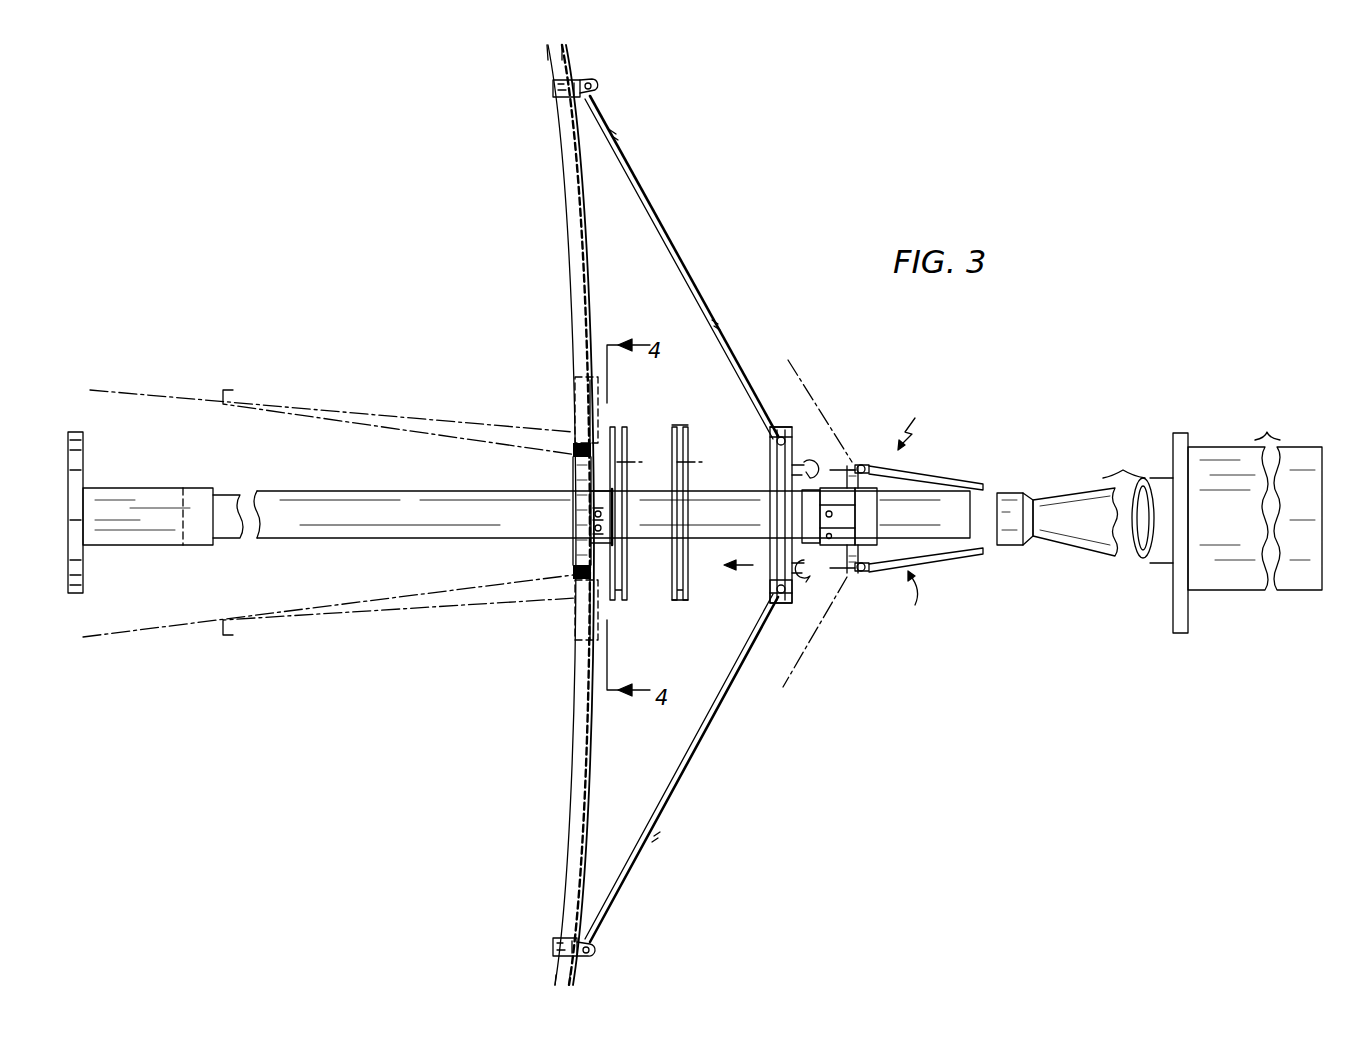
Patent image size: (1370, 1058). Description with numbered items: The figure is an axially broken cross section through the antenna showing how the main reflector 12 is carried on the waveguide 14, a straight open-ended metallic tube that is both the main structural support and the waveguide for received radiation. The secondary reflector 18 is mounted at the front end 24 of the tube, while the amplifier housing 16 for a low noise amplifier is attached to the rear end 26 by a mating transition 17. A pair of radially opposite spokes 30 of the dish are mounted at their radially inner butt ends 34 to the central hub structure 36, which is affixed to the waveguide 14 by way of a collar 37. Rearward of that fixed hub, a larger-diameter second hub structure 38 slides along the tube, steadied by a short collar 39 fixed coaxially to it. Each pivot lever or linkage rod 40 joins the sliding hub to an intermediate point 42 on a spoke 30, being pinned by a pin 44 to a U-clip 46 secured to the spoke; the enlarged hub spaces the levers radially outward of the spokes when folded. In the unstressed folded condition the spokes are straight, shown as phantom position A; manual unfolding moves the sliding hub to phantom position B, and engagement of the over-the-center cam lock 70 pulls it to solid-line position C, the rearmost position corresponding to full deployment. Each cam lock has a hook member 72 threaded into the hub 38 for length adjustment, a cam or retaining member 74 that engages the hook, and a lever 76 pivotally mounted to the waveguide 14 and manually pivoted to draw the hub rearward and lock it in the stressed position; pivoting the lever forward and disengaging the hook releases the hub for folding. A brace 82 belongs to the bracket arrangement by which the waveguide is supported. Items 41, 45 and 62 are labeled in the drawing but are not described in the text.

The main reflector 12 is at (553, 291).
The waveguide 14 is at (332, 470).
The amplifier housing 16 is at (1226, 455).
The mating transition 17 is at (1065, 502).
The secondary reflector 18 is at (83, 428).
The front end 24 is at (183, 470).
The rear end 26 is at (990, 488).
The radial spokes 30 is at (575, 316).
The radially inner butt ends 34 is at (572, 455).
The central hub structure 36 is at (577, 512).
The collar 37 is at (592, 540).
The second hub structure 38 is at (690, 451).
The short collar 39 is at (760, 528).
The pivot lever or linkage rod 40 is at (693, 269).
The brace strip 41 is at (623, 137).
The intermediate point 42 is at (566, 82).
The pin 44 is at (594, 89).
The riser plate 45 is at (777, 423).
The U-clip 46 is at (556, 93).
The slide block 62 is at (597, 347).
The over-the-center cam lock 70 is at (909, 521).
The hook member 72 is at (806, 462).
The cam or retaining member 74 is at (865, 470).
The lever 76 is at (950, 480).
The brace 82 is at (822, 508).
The phantom position A is at (623, 427).
The phantom position B is at (693, 412).
The solid-line position C is at (776, 426).